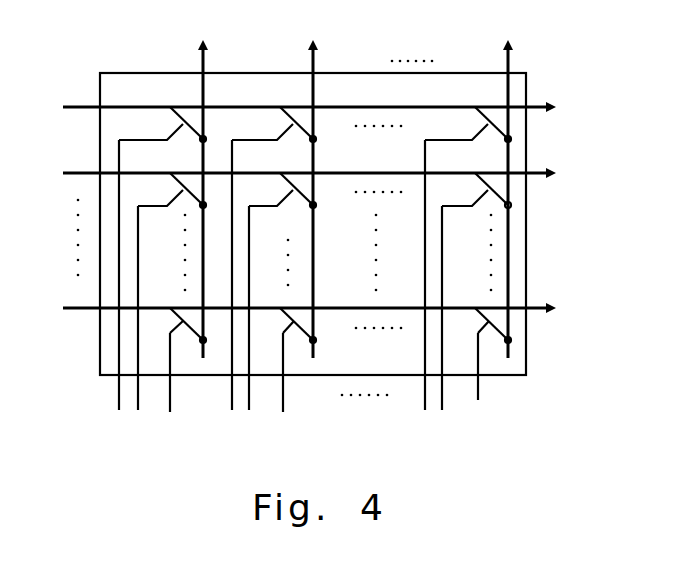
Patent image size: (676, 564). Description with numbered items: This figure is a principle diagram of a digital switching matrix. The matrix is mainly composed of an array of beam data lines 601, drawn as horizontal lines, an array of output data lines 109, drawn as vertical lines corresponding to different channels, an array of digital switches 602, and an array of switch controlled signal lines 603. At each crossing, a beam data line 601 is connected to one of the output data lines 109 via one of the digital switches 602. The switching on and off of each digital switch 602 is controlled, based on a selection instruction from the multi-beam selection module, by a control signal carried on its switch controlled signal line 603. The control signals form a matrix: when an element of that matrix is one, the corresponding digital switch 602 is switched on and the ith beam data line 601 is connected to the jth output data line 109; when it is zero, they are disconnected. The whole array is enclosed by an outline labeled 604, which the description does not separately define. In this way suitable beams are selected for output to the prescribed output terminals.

The output data line 109 is at (199, 57).
The beam data line 601 is at (90, 103).
The digital switch 602 is at (176, 144).
The switch controlled signal line 603 is at (119, 397).
The memory cell array 604 is at (516, 89).